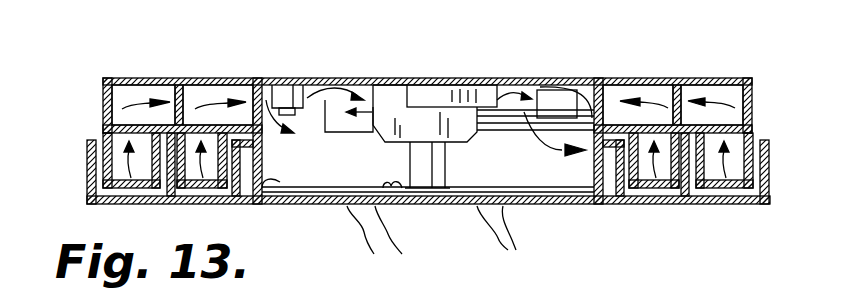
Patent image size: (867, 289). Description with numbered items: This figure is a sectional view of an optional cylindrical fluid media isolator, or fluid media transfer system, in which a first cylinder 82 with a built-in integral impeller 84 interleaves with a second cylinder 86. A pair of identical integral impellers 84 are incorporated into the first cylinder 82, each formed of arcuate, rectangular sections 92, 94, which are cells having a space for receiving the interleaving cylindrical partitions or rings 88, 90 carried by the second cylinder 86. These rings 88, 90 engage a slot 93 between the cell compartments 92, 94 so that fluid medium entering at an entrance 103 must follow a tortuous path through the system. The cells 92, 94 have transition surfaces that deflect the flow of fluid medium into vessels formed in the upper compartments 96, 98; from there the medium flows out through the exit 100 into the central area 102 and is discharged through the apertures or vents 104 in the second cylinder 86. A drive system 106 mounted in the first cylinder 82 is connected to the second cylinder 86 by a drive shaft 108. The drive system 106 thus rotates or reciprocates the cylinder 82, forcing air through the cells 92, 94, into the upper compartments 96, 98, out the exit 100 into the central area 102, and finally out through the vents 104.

The first cylinder 82 is at (738, 66).
The integral impeller 84 is at (118, 192).
The second cylinder 86 is at (784, 161).
The cylindrical partition or ring 88 is at (183, 189).
The cylindrical partition or ring 90 is at (303, 205).
The arcuate rectangular section 92 is at (122, 163).
The slot 93 is at (163, 125).
The arcuate rectangular section 94 is at (231, 197).
The upper compartment 96 is at (130, 88).
The upper compartment 98 is at (207, 88).
The exit 100 is at (273, 84).
The central area 102 is at (514, 88).
The entrance 103 is at (100, 142).
The aperture or vent 104 is at (448, 236).
The drive system 106 is at (394, 100).
The drive shaft 108 is at (410, 208).